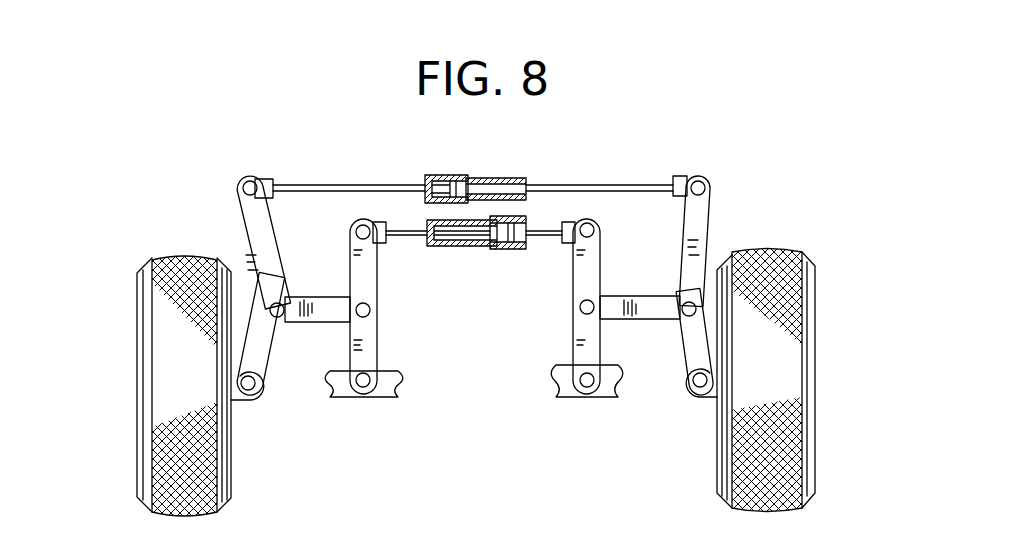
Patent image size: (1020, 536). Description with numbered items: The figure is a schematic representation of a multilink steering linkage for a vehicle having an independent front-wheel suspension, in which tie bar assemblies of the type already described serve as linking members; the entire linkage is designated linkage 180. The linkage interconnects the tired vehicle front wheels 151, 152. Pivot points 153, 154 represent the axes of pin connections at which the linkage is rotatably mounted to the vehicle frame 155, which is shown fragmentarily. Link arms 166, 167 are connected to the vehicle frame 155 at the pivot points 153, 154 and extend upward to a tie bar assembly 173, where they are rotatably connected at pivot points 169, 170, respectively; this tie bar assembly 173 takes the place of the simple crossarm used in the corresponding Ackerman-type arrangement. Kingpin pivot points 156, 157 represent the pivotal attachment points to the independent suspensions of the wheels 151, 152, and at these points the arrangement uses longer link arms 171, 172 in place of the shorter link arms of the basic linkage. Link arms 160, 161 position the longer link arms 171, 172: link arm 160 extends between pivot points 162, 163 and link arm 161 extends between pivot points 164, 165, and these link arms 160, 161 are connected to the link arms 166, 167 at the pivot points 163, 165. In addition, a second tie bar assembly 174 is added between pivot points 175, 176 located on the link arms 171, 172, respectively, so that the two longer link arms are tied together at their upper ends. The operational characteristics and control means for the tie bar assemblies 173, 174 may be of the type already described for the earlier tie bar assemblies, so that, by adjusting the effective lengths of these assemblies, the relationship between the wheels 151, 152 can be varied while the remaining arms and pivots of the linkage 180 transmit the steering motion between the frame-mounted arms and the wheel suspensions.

The front wheel 151 is at (143, 417).
The front wheel 152 is at (810, 378).
The pivot point 153 is at (364, 388).
The pivot point 154 is at (588, 388).
The vehicle frame 155 is at (400, 392).
The kingpin pivot point 156 is at (252, 398).
The kingpin pivot point 157 is at (698, 396).
The link arm 160 is at (318, 300).
The link arm 161 is at (640, 300).
The pivot point 162 is at (284, 318).
The pivot point 163 is at (370, 310).
The pivot point 164 is at (687, 316).
The pivot point 165 is at (582, 312).
The link arm 166 is at (375, 345).
The link arm 167 is at (578, 265).
The pivot point 169 is at (357, 229).
The pivot point 170 is at (593, 228).
The link arm 171 is at (248, 223).
The link arm 172 is at (703, 217).
The tie bar assembly 173 is at (460, 248).
The tie bar assembly 174 is at (497, 173).
The pivot point 175 is at (250, 181).
The pivot point 176 is at (700, 186).
The linkage 180 is at (609, 178).